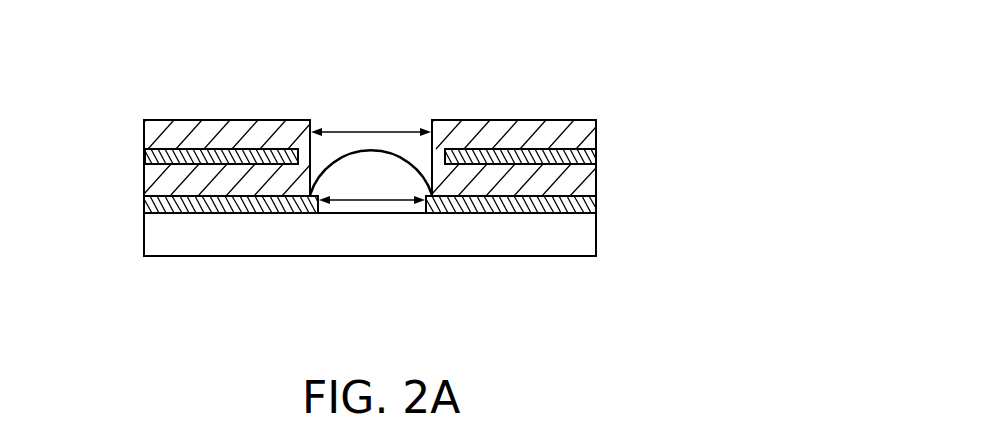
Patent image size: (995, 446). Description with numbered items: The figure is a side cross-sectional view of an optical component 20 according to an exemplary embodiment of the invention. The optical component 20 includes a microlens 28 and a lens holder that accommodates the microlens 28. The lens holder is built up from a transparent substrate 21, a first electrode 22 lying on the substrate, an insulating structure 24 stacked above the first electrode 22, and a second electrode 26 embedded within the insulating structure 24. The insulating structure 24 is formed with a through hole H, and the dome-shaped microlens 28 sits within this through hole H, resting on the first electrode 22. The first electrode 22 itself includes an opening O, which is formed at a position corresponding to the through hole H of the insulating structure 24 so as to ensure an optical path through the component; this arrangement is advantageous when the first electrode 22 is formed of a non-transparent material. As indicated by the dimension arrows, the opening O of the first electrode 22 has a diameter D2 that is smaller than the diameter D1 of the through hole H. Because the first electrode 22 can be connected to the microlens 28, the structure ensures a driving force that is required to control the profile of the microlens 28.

The optical component 20 is at (372, 159).
The transparent substrate 21 is at (588, 247).
The first electrode 22 is at (596, 203).
The insulating structure 24 is at (148, 183).
The second electrode 26 is at (596, 157).
The microlens 28 is at (360, 150).
The through hole H is at (328, 110).
The opening O is at (410, 208).
The diameter of through hole D1 is at (371, 119).
The diameter of opening D2 is at (355, 203).